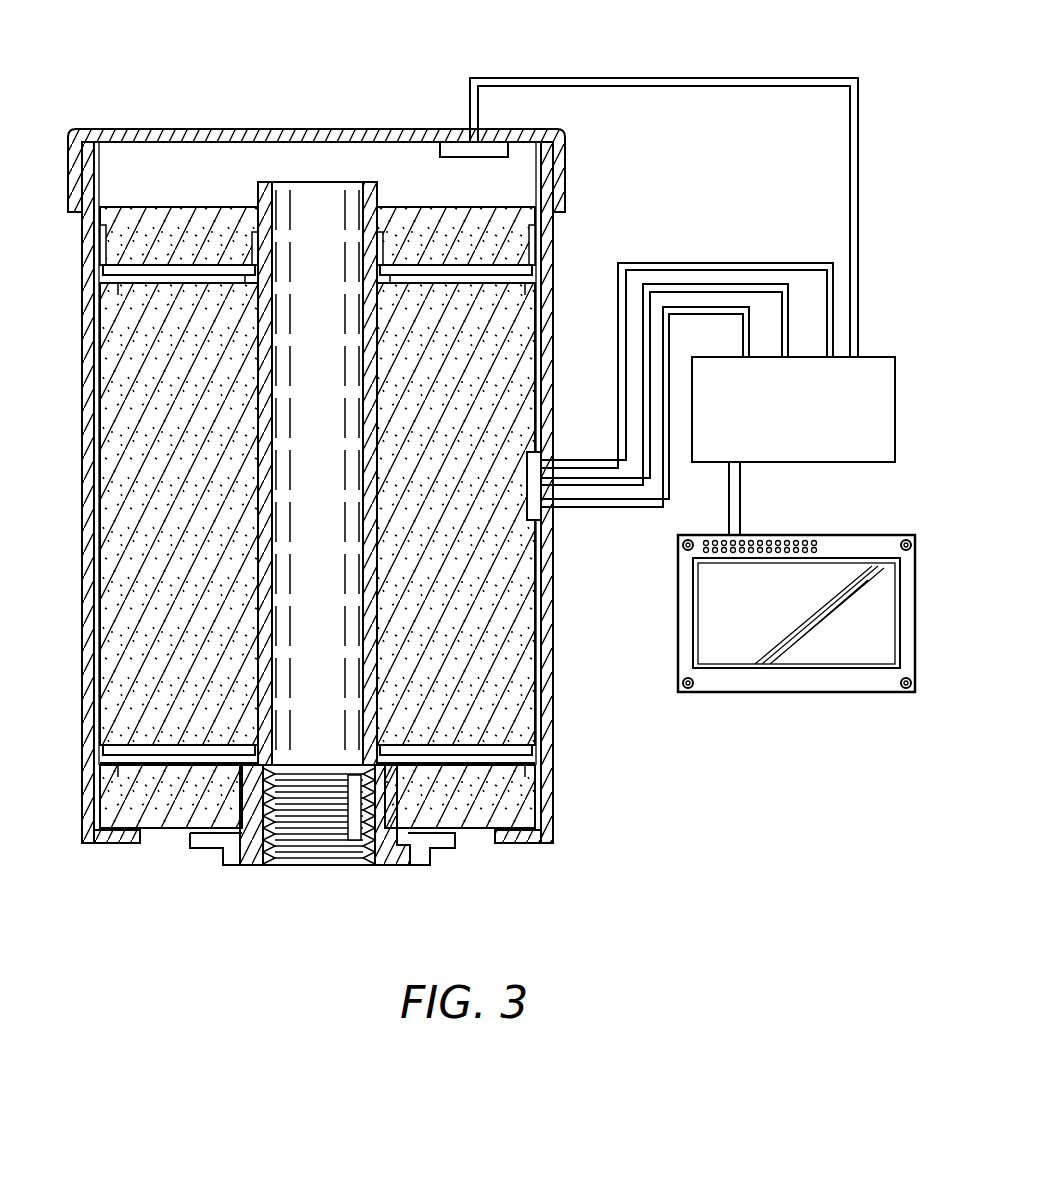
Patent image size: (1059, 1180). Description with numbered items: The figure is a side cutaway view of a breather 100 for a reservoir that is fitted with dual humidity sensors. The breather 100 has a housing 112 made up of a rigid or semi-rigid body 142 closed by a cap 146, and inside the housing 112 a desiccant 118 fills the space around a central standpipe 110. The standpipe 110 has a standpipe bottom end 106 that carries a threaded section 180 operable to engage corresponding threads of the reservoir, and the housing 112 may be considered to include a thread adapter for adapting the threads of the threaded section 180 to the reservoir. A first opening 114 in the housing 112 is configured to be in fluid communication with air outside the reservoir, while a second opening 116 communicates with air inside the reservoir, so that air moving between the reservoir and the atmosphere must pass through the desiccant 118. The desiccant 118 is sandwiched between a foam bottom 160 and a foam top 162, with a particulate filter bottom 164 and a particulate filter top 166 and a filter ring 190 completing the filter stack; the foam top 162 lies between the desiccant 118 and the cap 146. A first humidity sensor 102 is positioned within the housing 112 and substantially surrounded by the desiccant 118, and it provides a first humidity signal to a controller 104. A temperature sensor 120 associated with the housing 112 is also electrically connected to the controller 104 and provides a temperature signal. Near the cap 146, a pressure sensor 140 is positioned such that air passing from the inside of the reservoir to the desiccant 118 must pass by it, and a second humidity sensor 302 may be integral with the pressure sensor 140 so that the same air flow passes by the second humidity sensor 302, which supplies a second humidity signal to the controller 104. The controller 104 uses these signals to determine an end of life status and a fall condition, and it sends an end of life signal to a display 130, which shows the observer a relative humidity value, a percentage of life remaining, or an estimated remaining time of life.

The breather 100 is at (642, 60).
The first humidity sensor 102 is at (541, 510).
The controller 104 is at (881, 356).
The standpipe bottom end 106 is at (340, 625).
The standpipe 110 is at (323, 473).
The housing 112 is at (572, 240).
The first opening 114 is at (160, 852).
The second opening 116 is at (322, 859).
The desiccant 118 is at (140, 435).
The temperature sensor 120 is at (548, 455).
The display 130 is at (845, 537).
The pressure sensor 140 is at (470, 128).
The body 142 is at (95, 610).
The cap 146 is at (78, 163).
The foam bottom 160 is at (140, 808).
The foam top 162 is at (130, 238).
The particulate filter bottom 164 is at (140, 742).
The particulate filter top 166 is at (150, 283).
The threaded section 180 is at (290, 858).
The filter ring 190 is at (140, 310).
The second humidity sensor 302 is at (452, 143).